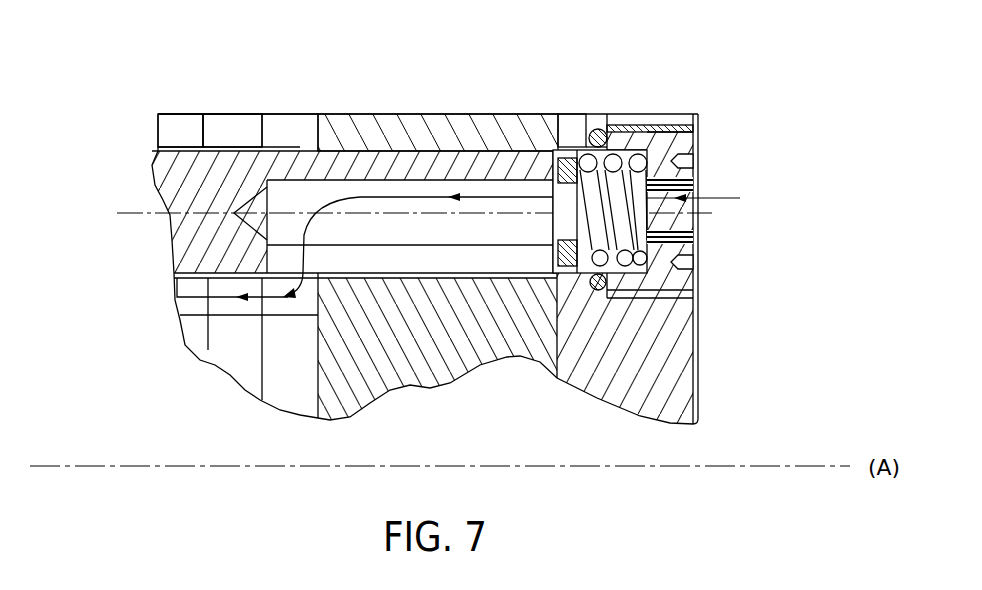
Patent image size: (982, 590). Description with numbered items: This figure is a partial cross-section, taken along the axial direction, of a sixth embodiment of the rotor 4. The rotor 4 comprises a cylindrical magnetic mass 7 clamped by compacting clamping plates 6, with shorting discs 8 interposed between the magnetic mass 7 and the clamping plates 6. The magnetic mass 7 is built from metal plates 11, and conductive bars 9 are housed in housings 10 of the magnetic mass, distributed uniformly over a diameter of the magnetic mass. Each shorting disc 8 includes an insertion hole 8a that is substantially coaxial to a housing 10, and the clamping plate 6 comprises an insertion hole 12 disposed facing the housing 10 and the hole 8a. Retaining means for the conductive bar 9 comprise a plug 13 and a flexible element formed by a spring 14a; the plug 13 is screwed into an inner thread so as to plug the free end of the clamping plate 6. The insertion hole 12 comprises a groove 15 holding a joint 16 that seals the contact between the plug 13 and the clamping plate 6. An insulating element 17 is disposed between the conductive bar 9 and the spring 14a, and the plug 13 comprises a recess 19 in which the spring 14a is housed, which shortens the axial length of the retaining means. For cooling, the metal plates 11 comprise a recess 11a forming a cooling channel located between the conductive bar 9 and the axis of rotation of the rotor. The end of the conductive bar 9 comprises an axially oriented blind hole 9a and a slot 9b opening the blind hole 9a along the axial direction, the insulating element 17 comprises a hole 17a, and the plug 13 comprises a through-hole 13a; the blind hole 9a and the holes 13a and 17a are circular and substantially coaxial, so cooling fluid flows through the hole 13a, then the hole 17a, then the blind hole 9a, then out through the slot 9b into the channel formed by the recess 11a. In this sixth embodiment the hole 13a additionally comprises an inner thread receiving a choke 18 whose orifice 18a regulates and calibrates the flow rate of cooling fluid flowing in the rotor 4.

The rotor 4 is at (251, 106).
The clamping plate 6 is at (653, 106).
The magnetic mass 7 is at (183, 108).
The shorting disc 8 is at (393, 122).
The insertion hole 8a is at (465, 148).
The conductive bar 9 is at (172, 190).
The blind hole 9a is at (407, 365).
The slot 9b is at (462, 258).
The housing 10 is at (155, 128).
The metal plate 11 is at (221, 125).
The recess 11a is at (178, 292).
The insertion hole 12 is at (560, 125).
The plug 13 is at (700, 133).
The through-hole 13a is at (698, 237).
The spring 14a is at (698, 250).
The groove 15 is at (605, 119).
The joint 16 is at (599, 129).
The insulating element 17 is at (580, 262).
The hole 17a is at (552, 240).
The choke 18 is at (700, 187).
The orifice 18a is at (700, 223).
The recess 19 is at (690, 120).